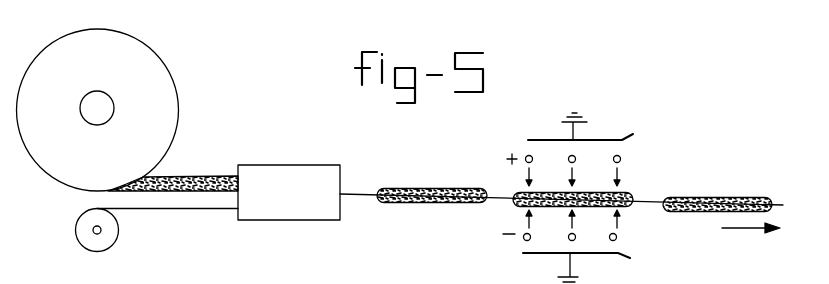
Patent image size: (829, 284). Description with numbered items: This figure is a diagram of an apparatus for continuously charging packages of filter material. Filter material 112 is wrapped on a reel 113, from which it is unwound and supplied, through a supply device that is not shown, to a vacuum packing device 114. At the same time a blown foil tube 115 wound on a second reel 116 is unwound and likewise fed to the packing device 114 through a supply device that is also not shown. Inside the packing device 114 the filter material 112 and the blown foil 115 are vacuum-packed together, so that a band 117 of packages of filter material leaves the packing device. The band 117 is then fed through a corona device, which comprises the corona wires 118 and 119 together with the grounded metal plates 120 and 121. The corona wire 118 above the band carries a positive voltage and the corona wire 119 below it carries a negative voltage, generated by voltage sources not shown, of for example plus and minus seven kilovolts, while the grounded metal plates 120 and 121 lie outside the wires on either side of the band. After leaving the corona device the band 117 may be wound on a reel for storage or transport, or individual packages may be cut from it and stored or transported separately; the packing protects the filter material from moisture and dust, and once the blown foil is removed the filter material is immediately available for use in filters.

The filter material 112 is at (200, 177).
The reel 113 is at (158, 87).
The vacuum packing device 114 is at (277, 210).
The blown foil tube 115 is at (187, 210).
The reel 116 is at (112, 236).
The band 117 is at (420, 202).
The corona wire 118 is at (621, 158).
The corona wire 119 is at (618, 238).
The grounded metal plate 120 is at (633, 134).
The grounded metal plate 121 is at (630, 258).